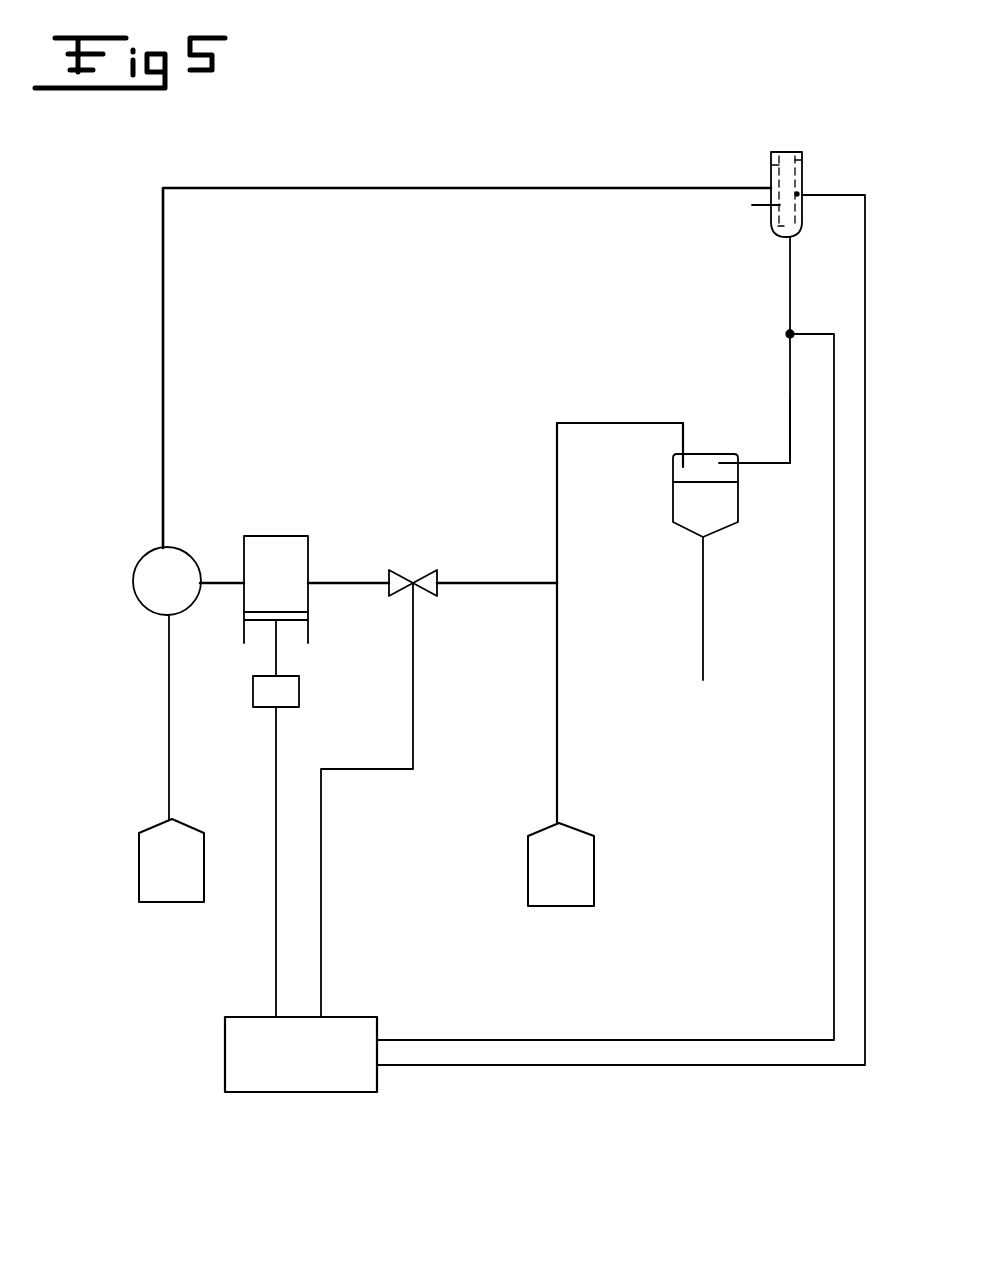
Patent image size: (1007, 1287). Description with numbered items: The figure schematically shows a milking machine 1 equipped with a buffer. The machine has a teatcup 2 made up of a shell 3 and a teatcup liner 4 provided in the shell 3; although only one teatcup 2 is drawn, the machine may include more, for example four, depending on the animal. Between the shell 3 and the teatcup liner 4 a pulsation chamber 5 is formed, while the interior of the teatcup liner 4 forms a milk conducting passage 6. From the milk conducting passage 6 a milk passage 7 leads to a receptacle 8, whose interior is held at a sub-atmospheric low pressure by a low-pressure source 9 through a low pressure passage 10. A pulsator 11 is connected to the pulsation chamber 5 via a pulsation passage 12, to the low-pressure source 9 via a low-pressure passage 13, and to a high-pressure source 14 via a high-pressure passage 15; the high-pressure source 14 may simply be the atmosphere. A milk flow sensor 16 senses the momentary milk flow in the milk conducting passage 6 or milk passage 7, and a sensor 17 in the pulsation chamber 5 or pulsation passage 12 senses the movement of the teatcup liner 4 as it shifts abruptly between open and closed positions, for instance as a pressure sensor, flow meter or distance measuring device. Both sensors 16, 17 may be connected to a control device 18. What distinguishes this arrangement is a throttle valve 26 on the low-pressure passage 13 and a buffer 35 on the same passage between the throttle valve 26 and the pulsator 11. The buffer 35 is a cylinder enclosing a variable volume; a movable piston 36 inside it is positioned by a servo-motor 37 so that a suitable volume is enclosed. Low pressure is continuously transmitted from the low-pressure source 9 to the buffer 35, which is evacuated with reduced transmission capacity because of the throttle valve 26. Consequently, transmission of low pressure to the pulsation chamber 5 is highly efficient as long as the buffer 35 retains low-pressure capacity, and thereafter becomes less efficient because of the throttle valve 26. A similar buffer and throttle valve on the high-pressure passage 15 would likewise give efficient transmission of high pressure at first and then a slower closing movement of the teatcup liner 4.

The milking machine 1 is at (492, 156).
The teatcup 2 is at (792, 154).
The shell 3 is at (806, 160).
The teatcup liner 4 is at (756, 205).
The pulsation chamber 5 is at (778, 167).
The milk conducting passage 6 is at (780, 226).
The milk passage 7 is at (790, 394).
The receptacle 8 is at (707, 516).
The low-pressure source 9 is at (576, 860).
The low pressure passage 10 is at (558, 519).
The pulsator 11 is at (175, 570).
The pulsation passage 12 is at (527, 188).
The low-pressure passage 13 is at (473, 583).
The high-pressure source 14 is at (154, 871).
The high-pressure passage 15 is at (168, 718).
The milk flow sensor 16 is at (788, 334).
The sensor 17 is at (800, 190).
The control device 18 is at (370, 1088).
The throttle valve 26 is at (399, 582).
The buffer 35 is at (281, 545).
The movable piston 36 is at (289, 622).
The servo-motor 37 is at (281, 694).